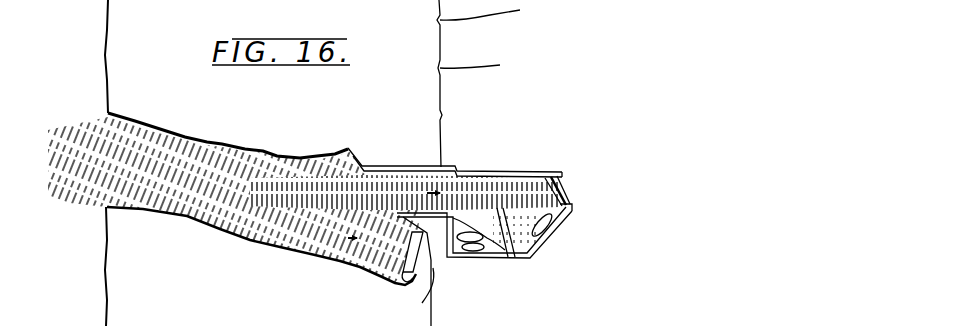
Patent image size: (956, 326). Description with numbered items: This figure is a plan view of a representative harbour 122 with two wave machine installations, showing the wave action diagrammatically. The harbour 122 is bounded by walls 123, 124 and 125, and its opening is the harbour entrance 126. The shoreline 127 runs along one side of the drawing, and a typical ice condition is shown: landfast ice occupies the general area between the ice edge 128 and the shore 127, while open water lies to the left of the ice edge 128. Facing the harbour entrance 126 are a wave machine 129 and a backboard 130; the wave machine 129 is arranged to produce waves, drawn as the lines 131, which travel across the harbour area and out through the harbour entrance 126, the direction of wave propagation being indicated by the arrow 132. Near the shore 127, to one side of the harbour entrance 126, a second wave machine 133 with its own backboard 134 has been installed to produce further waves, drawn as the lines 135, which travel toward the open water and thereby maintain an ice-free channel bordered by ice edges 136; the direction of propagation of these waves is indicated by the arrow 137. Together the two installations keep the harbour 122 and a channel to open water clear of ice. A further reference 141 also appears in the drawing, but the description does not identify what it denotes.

The harbour 122 is at (556, 165).
The wall 123 is at (541, 242).
The wall 124 is at (569, 204).
The wall 125 is at (518, 170).
The harbour entrance 126 is at (378, 187).
The shoreline 127 is at (441, 92).
The ice edge 128 is at (108, 30).
The wave machine 129 is at (551, 182).
The backboard 130 is at (567, 197).
The waves 131 is at (508, 257).
The arrow 132 is at (446, 193).
The second wave machine 133 is at (402, 268).
The backboard 134 is at (416, 297).
The waves 135 is at (257, 213).
The ice edges 136 is at (205, 131).
The arrow 137 is at (363, 242).
The floor 141 is at (228, 319).